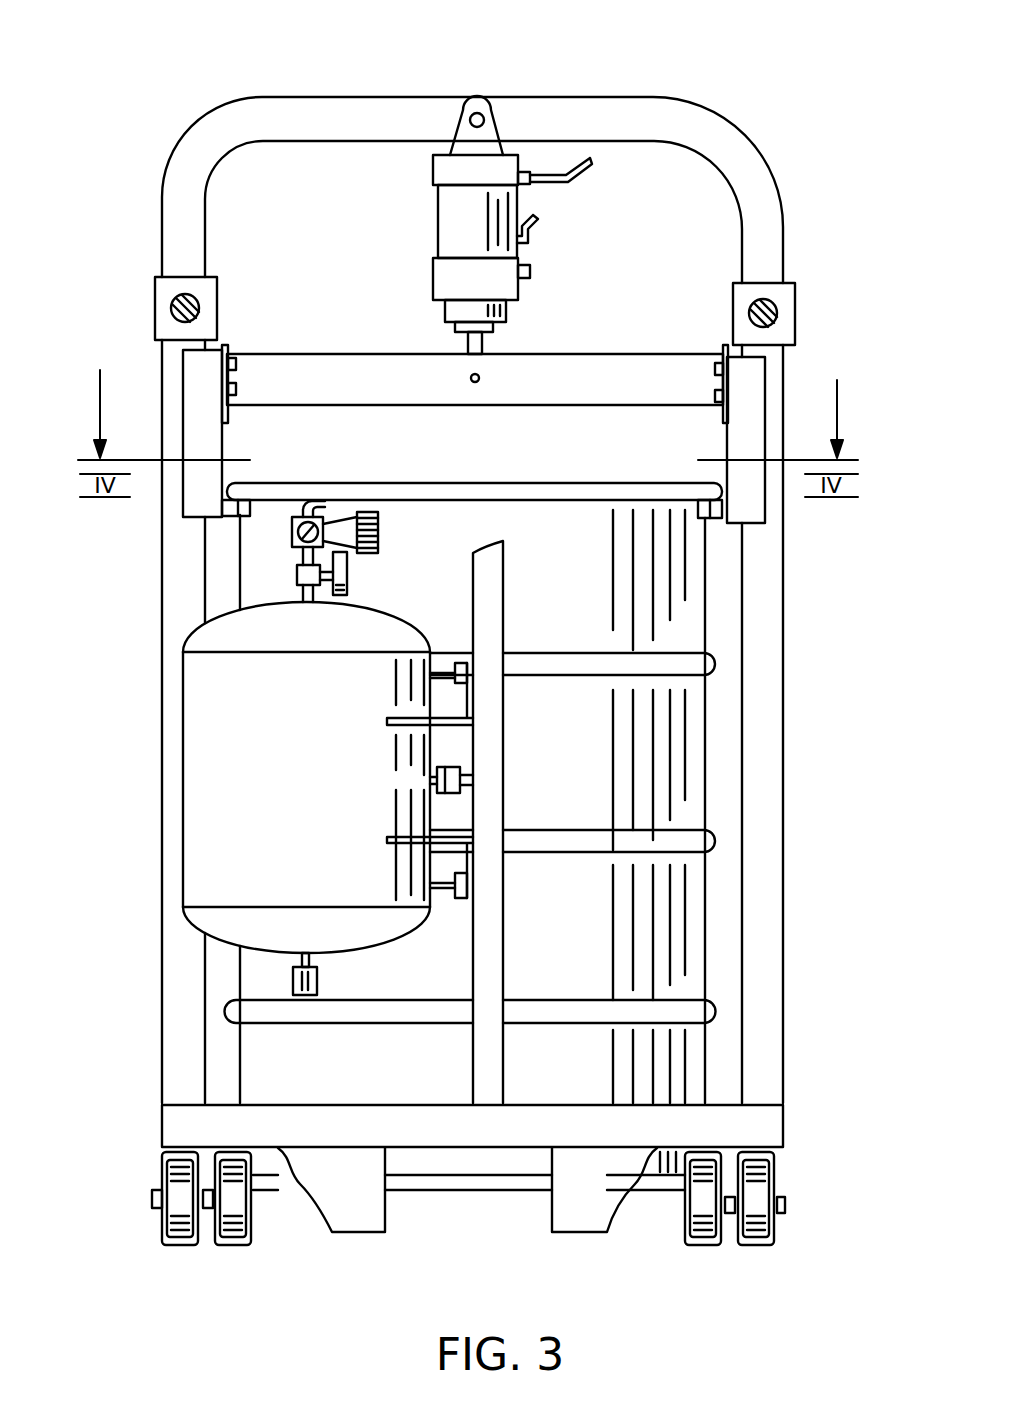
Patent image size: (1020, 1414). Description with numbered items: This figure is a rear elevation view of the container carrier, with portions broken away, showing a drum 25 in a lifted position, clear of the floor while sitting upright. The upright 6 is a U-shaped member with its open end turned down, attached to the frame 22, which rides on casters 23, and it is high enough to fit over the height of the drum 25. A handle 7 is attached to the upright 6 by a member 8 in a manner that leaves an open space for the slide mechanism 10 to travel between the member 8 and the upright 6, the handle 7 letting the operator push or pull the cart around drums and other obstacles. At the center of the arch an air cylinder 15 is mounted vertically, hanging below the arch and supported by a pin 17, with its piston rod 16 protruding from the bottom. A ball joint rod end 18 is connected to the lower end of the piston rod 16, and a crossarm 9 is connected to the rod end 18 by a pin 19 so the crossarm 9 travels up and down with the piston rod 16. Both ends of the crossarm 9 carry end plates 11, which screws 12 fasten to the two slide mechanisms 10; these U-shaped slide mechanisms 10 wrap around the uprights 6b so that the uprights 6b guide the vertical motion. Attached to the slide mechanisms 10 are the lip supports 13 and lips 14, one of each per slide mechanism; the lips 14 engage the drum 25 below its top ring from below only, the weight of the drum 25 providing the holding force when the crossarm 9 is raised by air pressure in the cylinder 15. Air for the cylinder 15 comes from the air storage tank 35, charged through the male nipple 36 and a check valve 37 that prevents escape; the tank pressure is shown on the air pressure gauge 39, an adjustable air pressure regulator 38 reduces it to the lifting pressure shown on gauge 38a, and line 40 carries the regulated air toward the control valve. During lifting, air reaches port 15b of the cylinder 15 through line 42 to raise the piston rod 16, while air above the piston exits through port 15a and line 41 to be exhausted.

The upright 6 is at (760, 150).
The uprights 6b is at (305, 97).
The handle 7 is at (194, 300).
The member 8 is at (160, 282).
The crossarm 9 is at (360, 353).
The slide mechanism 10 is at (183, 382).
The end plates 11 is at (228, 352).
The screws 12 is at (238, 364).
The lip supports 13 is at (252, 515).
The lips 14 is at (240, 505).
The air cylinder 15 is at (437, 205).
The port 15a is at (522, 168).
The port 15b is at (531, 272).
The piston rod 16 is at (452, 328).
The pin 17 is at (470, 108).
The rod end 18 is at (484, 346).
The pin 19 is at (479, 383).
The frame 22 is at (526, 1105).
The casters 23 is at (193, 1240).
The drum 25 is at (706, 806).
The air storage tank 35 is at (183, 847).
The male nipple 36 is at (472, 786).
The check valve 37 is at (445, 768).
The air pressure regulator 38 is at (380, 540).
The gauge 38a is at (291, 533).
The air pressure gauge 39 is at (348, 580).
The line 40 is at (322, 505).
The line 41 is at (570, 168).
The line 42 is at (545, 230).